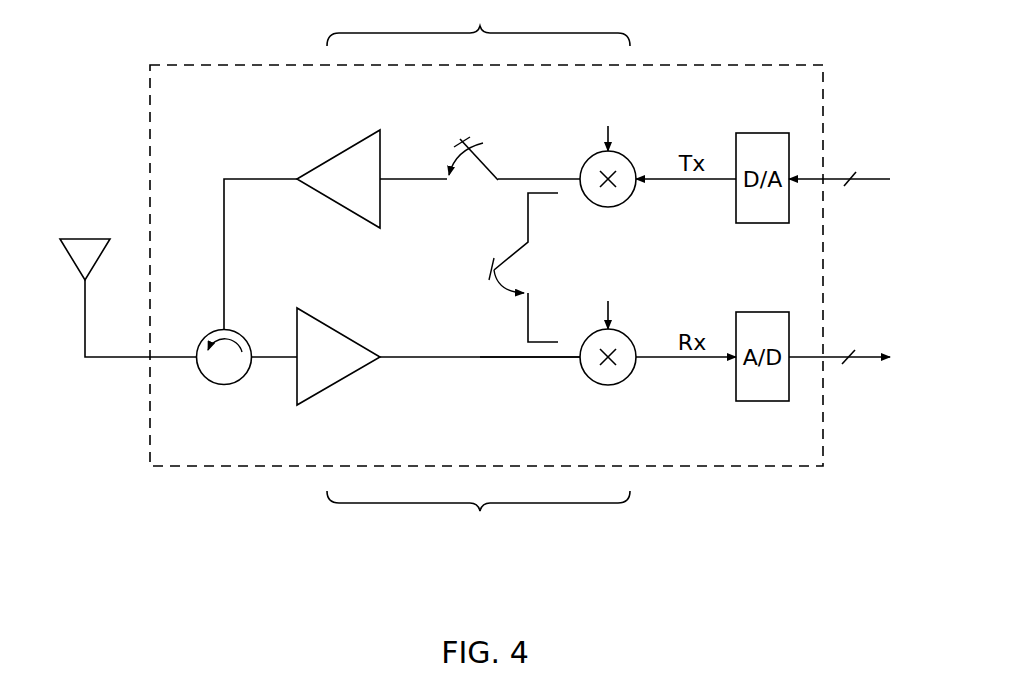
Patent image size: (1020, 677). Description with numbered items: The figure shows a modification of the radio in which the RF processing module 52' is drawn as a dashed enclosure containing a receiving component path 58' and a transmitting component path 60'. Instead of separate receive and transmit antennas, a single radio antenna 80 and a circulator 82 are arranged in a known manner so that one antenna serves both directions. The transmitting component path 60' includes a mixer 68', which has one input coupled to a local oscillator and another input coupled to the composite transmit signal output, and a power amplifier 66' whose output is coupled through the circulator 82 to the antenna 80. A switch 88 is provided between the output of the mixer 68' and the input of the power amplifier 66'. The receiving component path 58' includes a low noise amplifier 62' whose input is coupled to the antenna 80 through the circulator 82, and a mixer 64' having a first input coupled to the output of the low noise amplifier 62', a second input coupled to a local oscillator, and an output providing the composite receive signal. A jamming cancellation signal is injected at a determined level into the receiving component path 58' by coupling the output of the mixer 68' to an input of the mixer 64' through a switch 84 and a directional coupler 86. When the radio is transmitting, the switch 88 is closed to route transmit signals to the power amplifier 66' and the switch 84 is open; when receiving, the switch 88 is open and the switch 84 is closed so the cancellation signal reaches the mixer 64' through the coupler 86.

The RF processing module 52' is at (480, 301).
The transmitting component path 60' is at (478, 23).
The receiving component path 58' is at (478, 517).
The radio antenna 80 is at (90, 220).
The circulator 82 is at (216, 386).
The power amplifier 66' is at (338, 158).
The low noise amplifier 62' is at (438, 380).
The switch 88 is at (487, 165).
The switch 84 is at (497, 287).
The directional coupler 86 is at (530, 359).
The mixer 68' is at (638, 151).
The mixer 64' is at (633, 362).